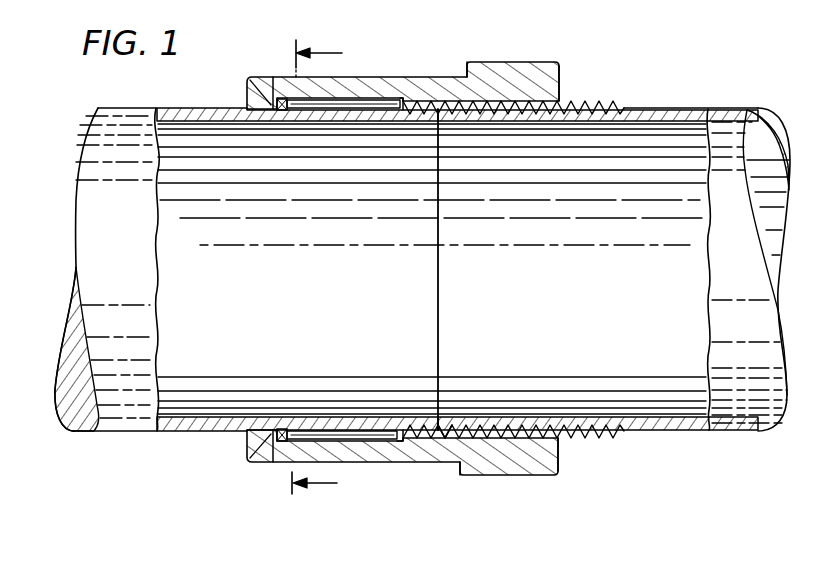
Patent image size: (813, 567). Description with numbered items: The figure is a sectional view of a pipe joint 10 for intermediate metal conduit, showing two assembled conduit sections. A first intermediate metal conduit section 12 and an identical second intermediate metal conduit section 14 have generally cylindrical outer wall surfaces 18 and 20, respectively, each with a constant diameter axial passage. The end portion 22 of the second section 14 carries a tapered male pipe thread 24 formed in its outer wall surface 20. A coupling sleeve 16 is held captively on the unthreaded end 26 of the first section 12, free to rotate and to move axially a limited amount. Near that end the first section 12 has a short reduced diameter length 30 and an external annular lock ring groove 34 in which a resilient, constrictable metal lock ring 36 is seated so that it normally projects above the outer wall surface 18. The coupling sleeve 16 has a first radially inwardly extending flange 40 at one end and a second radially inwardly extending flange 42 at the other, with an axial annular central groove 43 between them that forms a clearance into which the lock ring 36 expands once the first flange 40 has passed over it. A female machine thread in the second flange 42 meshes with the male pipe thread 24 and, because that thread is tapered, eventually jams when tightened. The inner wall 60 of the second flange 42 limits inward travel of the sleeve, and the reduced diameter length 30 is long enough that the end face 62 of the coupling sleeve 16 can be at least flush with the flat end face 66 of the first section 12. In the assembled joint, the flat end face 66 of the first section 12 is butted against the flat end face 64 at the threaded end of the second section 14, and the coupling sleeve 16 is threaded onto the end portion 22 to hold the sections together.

The pipe joint 10 is at (447, 57).
The first intermediate metal conduit section 12 is at (117, 108).
The second intermediate metal conduit section 14 is at (643, 106).
The coupling sleeve 16 is at (531, 62).
The outer wall surface 18 is at (183, 108).
The outer wall surface 20 is at (687, 108).
The end portion 22 is at (505, 122).
The tapered male pipe thread 24 is at (593, 106).
The end 26 is at (343, 422).
The reduced diameter length 30 is at (316, 429).
The annular lock ring groove 34 is at (281, 428).
The lock ring 36 is at (284, 99).
The first flange 40 is at (253, 80).
The second flange 42 is at (557, 105).
The annular central groove 43 is at (373, 102).
The inner wall 60 is at (407, 98).
The end face 62 is at (558, 463).
The flat end face 64 is at (428, 428).
The flat end face 66 is at (444, 428).